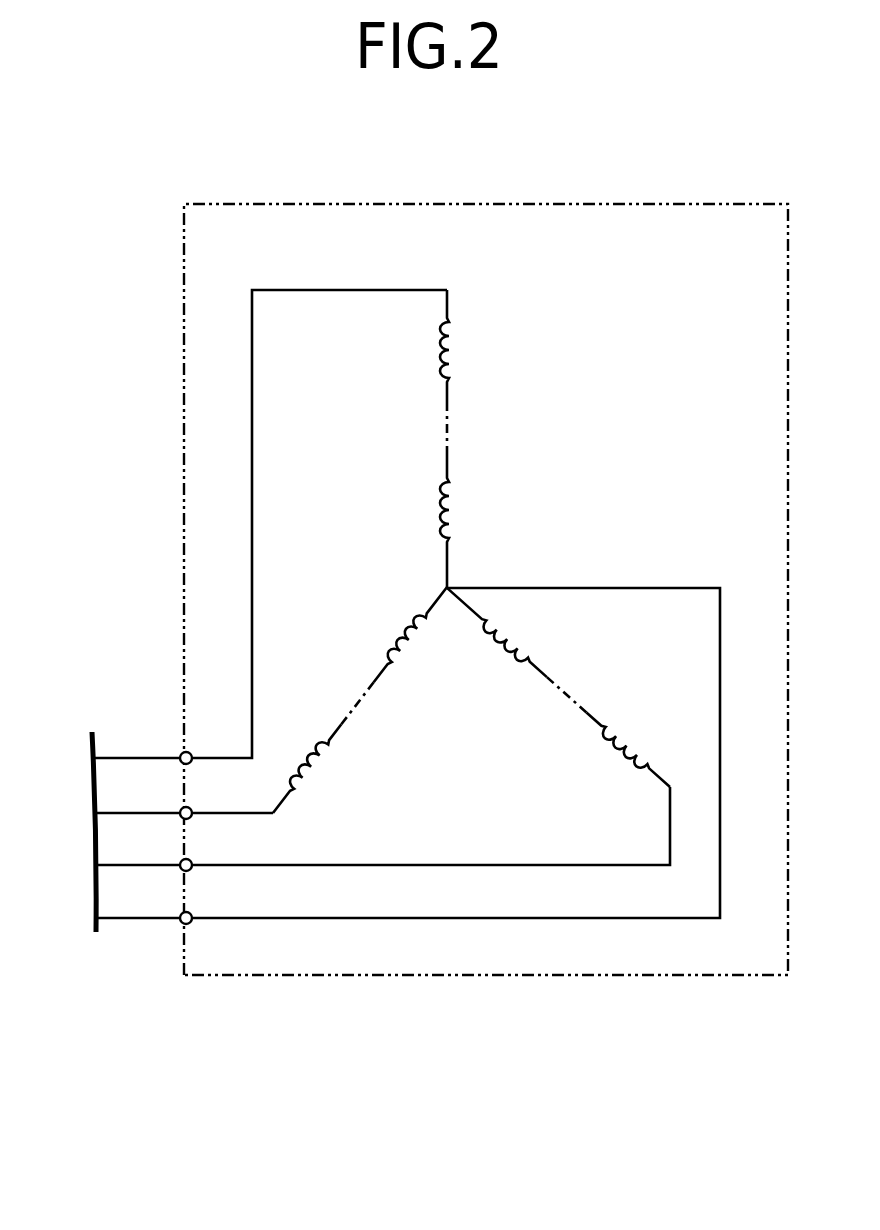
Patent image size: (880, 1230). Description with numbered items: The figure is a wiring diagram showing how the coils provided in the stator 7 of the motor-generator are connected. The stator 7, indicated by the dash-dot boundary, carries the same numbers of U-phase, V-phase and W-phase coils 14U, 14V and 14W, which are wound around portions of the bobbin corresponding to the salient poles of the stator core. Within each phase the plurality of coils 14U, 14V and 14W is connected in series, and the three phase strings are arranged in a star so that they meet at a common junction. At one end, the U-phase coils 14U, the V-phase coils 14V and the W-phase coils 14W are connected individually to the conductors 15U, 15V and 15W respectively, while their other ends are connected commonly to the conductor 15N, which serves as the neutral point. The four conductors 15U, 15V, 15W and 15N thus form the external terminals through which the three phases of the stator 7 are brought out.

The stator 7 is at (485, 975).
The U-phase coils 14U is at (450, 348).
The V-phase coils 14V is at (403, 632).
The W-phase coils 14W is at (512, 640).
The conductor 15U is at (147, 757).
The conductor 15V is at (117, 808).
The conductor 15W is at (127, 863).
The conductor 15N is at (145, 918).